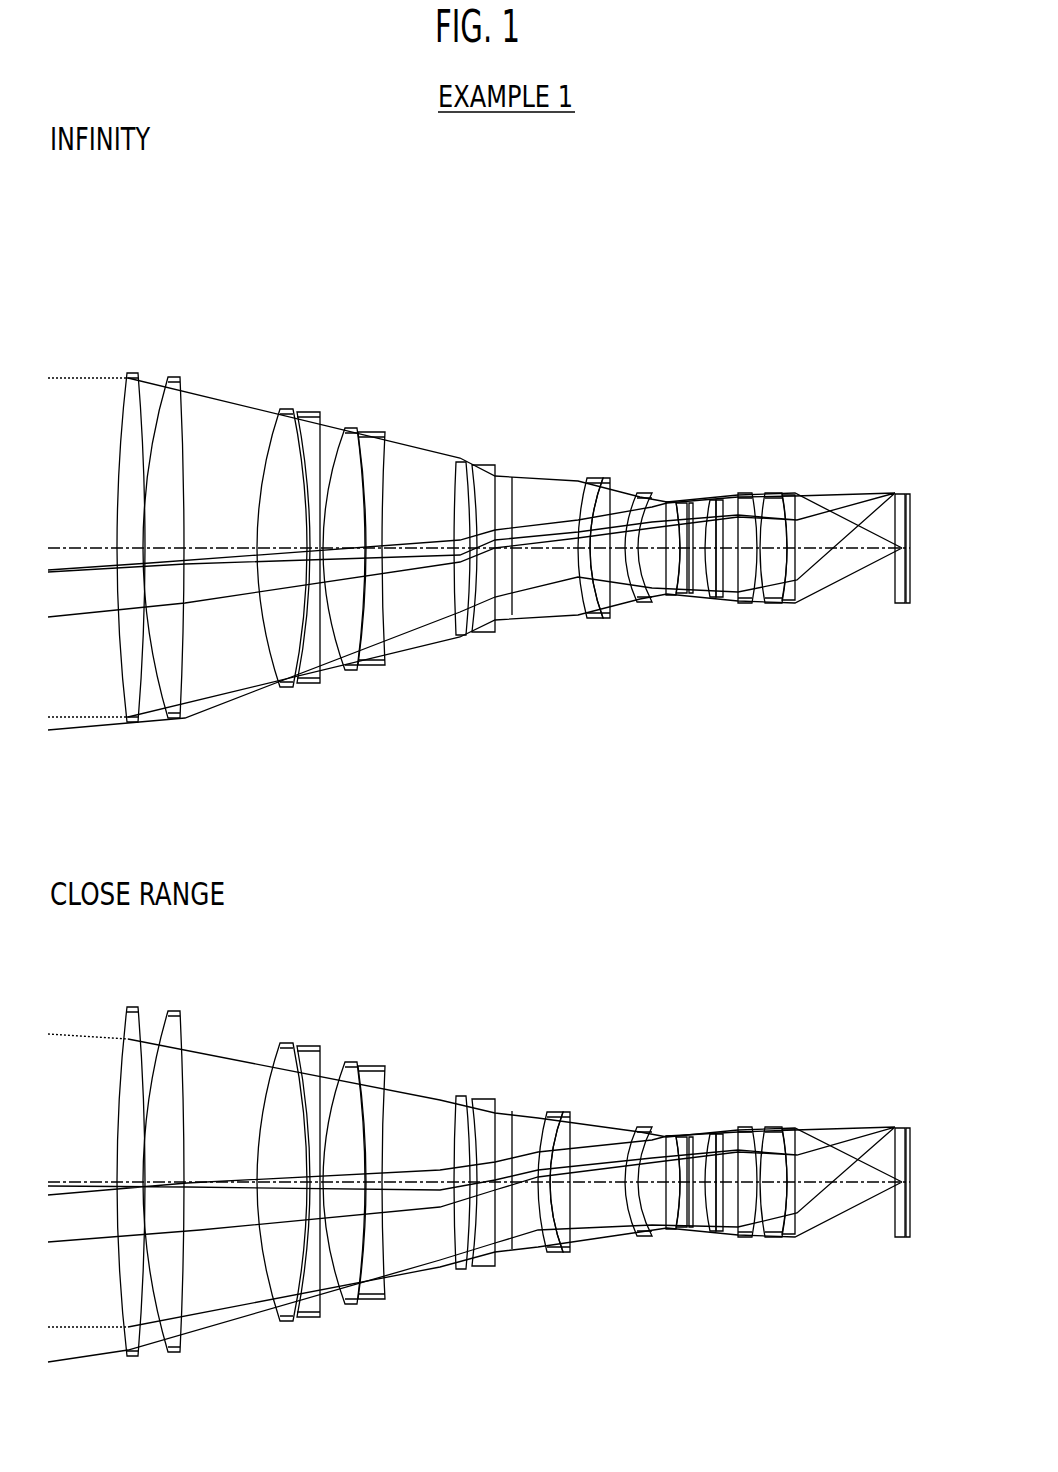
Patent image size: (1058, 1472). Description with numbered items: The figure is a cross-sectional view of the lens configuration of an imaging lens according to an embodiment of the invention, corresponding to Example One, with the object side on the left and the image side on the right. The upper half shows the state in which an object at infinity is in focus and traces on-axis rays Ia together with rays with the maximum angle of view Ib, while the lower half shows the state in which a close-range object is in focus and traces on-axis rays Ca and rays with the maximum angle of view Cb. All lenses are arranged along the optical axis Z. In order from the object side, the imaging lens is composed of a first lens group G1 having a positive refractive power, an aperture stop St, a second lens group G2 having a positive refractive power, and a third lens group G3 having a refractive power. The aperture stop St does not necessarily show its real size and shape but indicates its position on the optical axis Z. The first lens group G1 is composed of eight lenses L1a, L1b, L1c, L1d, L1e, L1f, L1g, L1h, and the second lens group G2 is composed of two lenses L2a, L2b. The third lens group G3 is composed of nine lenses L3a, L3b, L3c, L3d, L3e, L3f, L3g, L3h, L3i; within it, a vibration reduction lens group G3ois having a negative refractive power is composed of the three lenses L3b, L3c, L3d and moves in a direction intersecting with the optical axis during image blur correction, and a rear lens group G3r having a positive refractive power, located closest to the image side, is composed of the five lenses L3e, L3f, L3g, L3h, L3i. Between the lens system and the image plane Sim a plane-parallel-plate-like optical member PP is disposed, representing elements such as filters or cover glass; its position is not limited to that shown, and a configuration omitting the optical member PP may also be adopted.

The first lens group G1 is at (400, 220).
The second lens group G2 is at (520, 220).
The third lens group G3 is at (898, 219).
The vibration reduction lens group G3ois is at (710, 269).
The rear lens group G3r is at (898, 269).
The lens L1a is at (129, 372).
The lens L1b is at (172, 376).
The lens L1c is at (283, 408).
The lens L1d is at (303, 411).
The lens L1e is at (350, 427).
The lens L1f is at (367, 431).
The lens L1g is at (460, 461).
The lens L1h is at (482, 464).
The lens L2a is at (590, 477).
The lens L2b is at (605, 479).
The lens L3a is at (637, 492).
The lens L3b is at (668, 501).
The lens L3c is at (680, 502).
The lens L3d is at (691, 502).
The lens L3e is at (712, 499).
The lens L3f is at (719, 499).
The lens L3g is at (745, 492).
The lens L3h is at (772, 492).
The lens L3i is at (789, 494).
The aperture stop St is at (512, 616).
The optical member PP is at (892, 604).
The image plane Sim is at (908, 604).
The optical axis Z is at (68, 546).
The on-axis rays Ia is at (852, 568).
The rays with the maximum angle of view Ib is at (866, 488).
The on-axis rays Ca is at (852, 1205).
The rays with the maximum angle of view Cb is at (863, 1122).